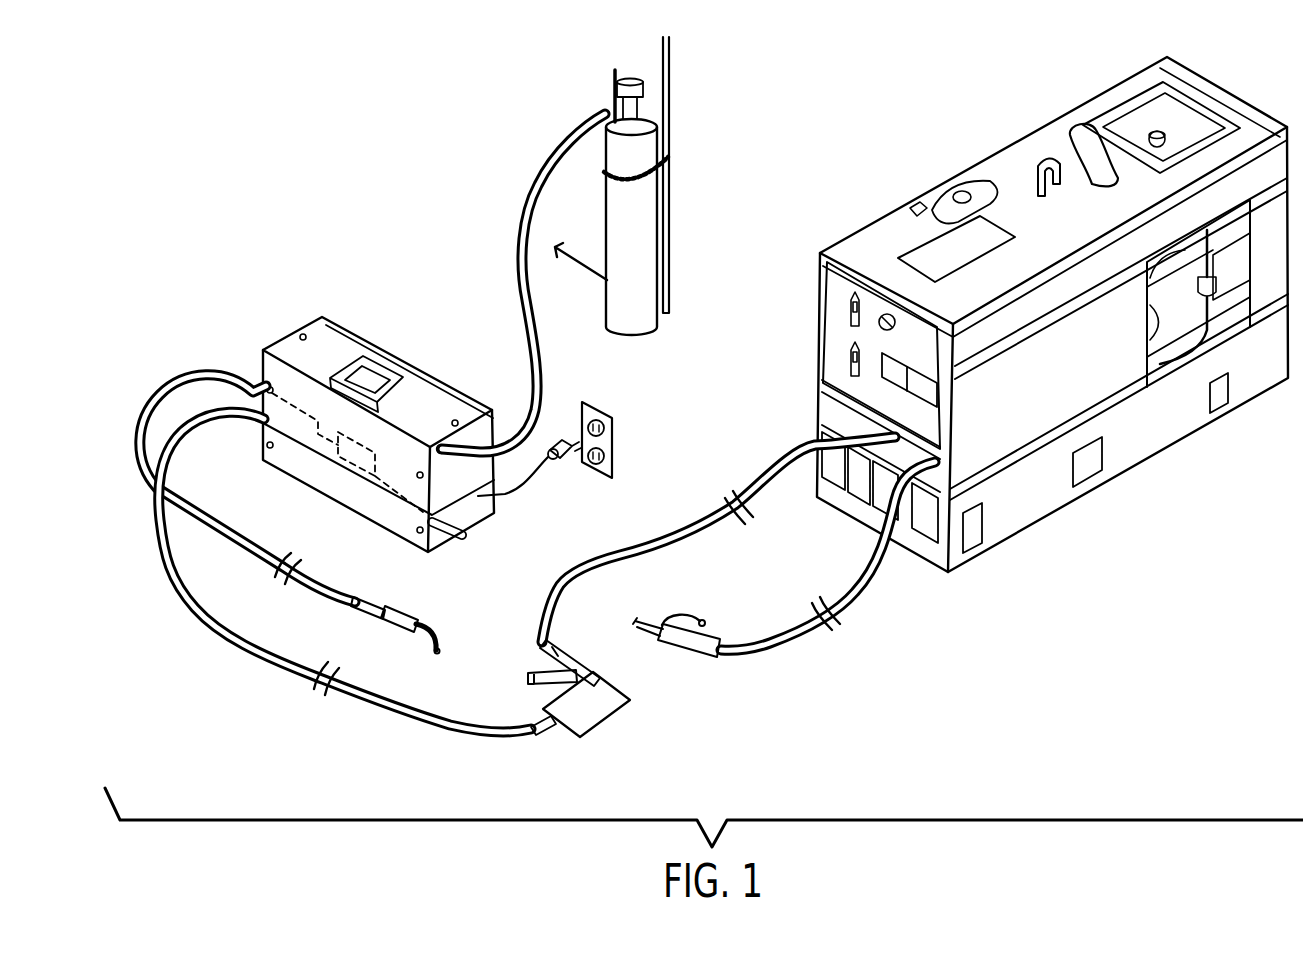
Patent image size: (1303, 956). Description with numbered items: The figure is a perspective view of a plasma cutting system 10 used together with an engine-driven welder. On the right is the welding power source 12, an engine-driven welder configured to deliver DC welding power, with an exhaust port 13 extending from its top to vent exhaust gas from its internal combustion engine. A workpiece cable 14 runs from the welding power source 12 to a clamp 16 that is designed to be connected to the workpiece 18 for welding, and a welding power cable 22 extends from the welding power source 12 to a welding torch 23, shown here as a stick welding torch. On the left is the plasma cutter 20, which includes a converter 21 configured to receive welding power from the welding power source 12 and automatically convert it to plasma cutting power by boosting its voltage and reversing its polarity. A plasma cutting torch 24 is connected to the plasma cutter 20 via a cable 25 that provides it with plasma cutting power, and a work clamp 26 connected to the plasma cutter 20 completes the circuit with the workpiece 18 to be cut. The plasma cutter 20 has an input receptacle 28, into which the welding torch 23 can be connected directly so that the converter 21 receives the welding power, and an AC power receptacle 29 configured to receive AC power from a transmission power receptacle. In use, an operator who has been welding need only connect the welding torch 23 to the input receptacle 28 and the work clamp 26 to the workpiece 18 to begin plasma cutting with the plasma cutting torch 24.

The plasma cutting system 10 is at (356, 158).
The welding power source 12 is at (1067, 117).
The exhaust port 13 is at (1107, 190).
The workpiece cable 14 is at (662, 543).
The clamp 16 is at (566, 656).
The workpiece 18 is at (600, 712).
The plasma cutter 20 is at (298, 332).
The converter 21 is at (345, 466).
The welding power cable 22 is at (870, 583).
The welding torch 23 is at (686, 651).
The plasma cutting torch 24 is at (380, 622).
The cable 25 is at (250, 532).
The work clamp 26 is at (548, 727).
The input receptacle 28 is at (607, 113).
The AC power receptacle 29 is at (549, 459).